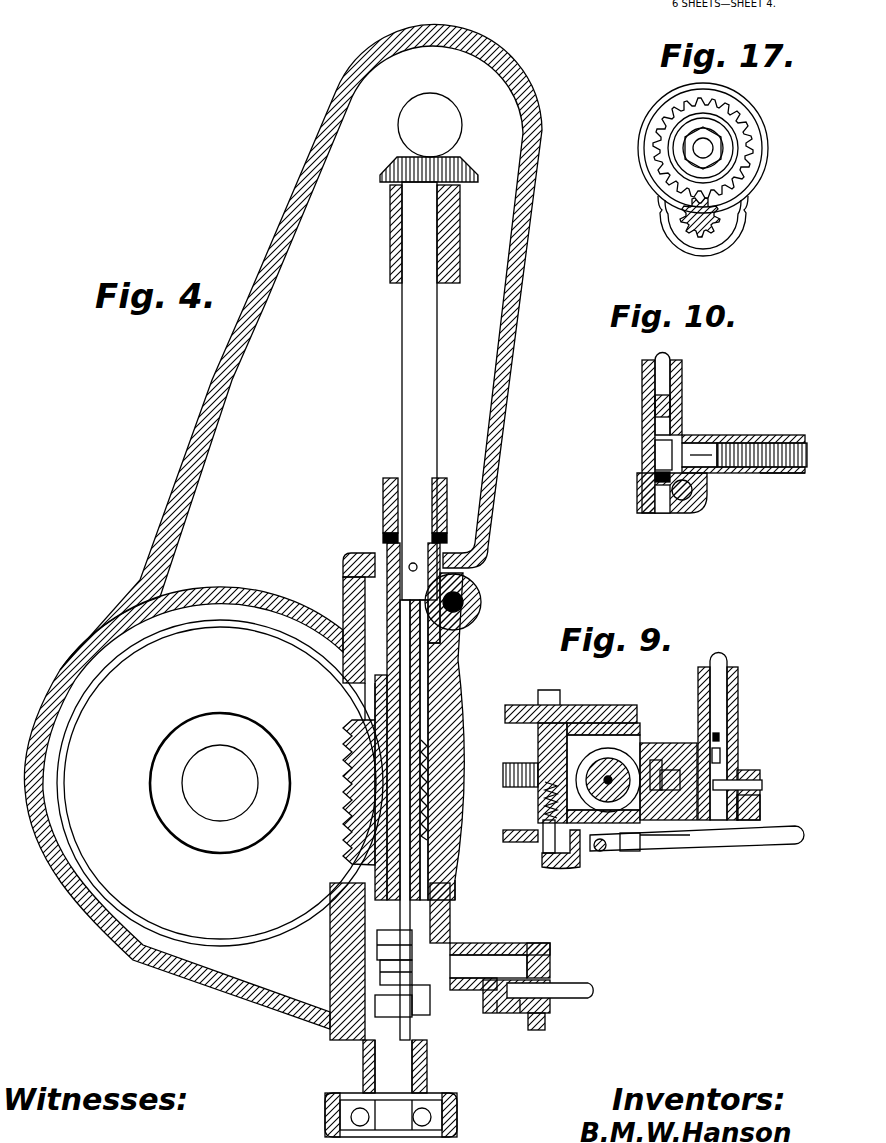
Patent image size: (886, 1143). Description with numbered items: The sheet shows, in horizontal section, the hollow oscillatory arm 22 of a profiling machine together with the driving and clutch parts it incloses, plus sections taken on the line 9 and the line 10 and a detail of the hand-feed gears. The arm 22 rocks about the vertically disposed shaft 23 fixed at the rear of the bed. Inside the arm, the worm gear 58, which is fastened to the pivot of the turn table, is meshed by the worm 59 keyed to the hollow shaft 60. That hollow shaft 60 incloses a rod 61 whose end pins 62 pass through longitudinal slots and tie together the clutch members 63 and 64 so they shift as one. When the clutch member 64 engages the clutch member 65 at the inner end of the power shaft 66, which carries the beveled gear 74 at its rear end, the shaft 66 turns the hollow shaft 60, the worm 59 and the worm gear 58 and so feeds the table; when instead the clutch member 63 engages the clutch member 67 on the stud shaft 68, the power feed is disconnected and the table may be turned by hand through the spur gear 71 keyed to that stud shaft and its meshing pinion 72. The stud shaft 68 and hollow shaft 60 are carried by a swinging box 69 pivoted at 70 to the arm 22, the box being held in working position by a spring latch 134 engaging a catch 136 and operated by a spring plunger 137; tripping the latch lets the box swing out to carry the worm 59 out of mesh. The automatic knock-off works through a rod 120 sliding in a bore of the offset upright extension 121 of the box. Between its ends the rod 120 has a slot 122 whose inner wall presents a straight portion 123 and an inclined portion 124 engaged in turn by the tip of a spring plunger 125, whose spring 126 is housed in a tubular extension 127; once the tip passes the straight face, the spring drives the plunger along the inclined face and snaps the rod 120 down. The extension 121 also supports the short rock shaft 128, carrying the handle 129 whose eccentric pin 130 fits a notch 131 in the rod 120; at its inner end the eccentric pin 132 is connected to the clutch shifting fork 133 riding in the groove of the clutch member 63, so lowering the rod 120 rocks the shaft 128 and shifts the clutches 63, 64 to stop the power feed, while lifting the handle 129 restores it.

In FIG. 4, the section line 9— 9 is at (330, 975).
In FIG. 9, the section line 10— 10 is at (720, 890).
In FIG. 4, the oscillatory member or arm 22 is at (185, 462).
In FIG. 4, the vertically disposed shaft 23 is at (440, 120).
In FIG. 4, the worm gear 58 is at (220, 783).
In FIG. 9, the worm gear 58 is at (507, 770).
In FIG. 4, the worm 59 is at (388, 740).
In FIG. 4, the hollow shaft 60 is at (462, 688).
In FIG. 9, the hollow shaft 60 is at (590, 753).
In FIG. 4, the rod 61 is at (400, 867).
In FIG. 9, the rod 61 is at (647, 747).
In FIG. 4, the projecting pins 62 is at (420, 633).
In FIG. 4, the clutch member 63 is at (417, 937).
In FIG. 9, the clutch member 63 is at (593, 757).
In FIG. 4, the clutch member 64 is at (481, 622).
In FIG. 4, the clutch member 65 is at (470, 577).
In FIG. 4, the shaft 66 is at (420, 423).
In FIG. 4, the clutch member 67 is at (450, 1023).
In FIG. 4, the stud shaft 68 is at (383, 1020).
In FIG. 17, the stud shaft 68 is at (703, 148).
In FIG. 4, the swinging box 69 is at (453, 878).
In FIG. 9, the swinging box 69 is at (570, 845).
In FIG. 4, the pivot 70 is at (447, 597).
In FIG. 4, the spur gear 71 is at (443, 1122).
In FIG. 17, the spur gear 71 is at (750, 148).
In FIG. 17, the pinion 72 is at (715, 217).
In FIG. 4, the beveled gear 74 is at (478, 170).
In FIG. 4, the rod 120 is at (512, 1013).
In FIG. 9, the rod 120 is at (717, 685).
In FIG. 10, the rod 120 is at (662, 378).
In FIG. 4, the offset upright extension 121 is at (520, 1013).
In FIG. 9, the offset upright extension 121 is at (737, 698).
In FIG. 10, the offset upright extension 121 is at (642, 383).
In FIG. 9, the slot 122 is at (721, 740).
In FIG. 10, the slot 122 is at (667, 425).
In FIG. 10, the straight portion 123 is at (640, 455).
In FIG. 10, the inclined portion 124 is at (640, 437).
In FIG. 10, the spring plunger 125 is at (712, 467).
In FIG. 10, the spring 126 is at (760, 475).
In FIG. 10, the tubular extension 127 is at (757, 437).
In FIG. 4, the short shaft 128 is at (500, 966).
In FIG. 9, the short shaft 128 is at (665, 777).
In FIG. 4, the handle 129 is at (547, 1025).
In FIG. 9, the handle 129 is at (760, 802).
In FIG. 4, the pin 130 is at (540, 992).
In FIG. 9, the pin 130 is at (743, 763).
In FIG. 10, the pin 130 is at (642, 487).
In FIG. 4, the notch 131 is at (523, 1033).
In FIG. 9, the notch 131 is at (762, 785).
In FIG. 10, the notch 131 is at (640, 478).
In FIG. 9, the eccentric pin 132 is at (650, 758).
In FIG. 4, the clutch shifting fork 133 is at (447, 1003).
In FIG. 9, the clutch shifting fork 133 is at (622, 750).
In FIG. 9, the spring latch 134 is at (653, 857).
In FIG. 9, the catch 136 is at (650, 847).
In FIG. 9, the spring plunger 137 is at (542, 827).